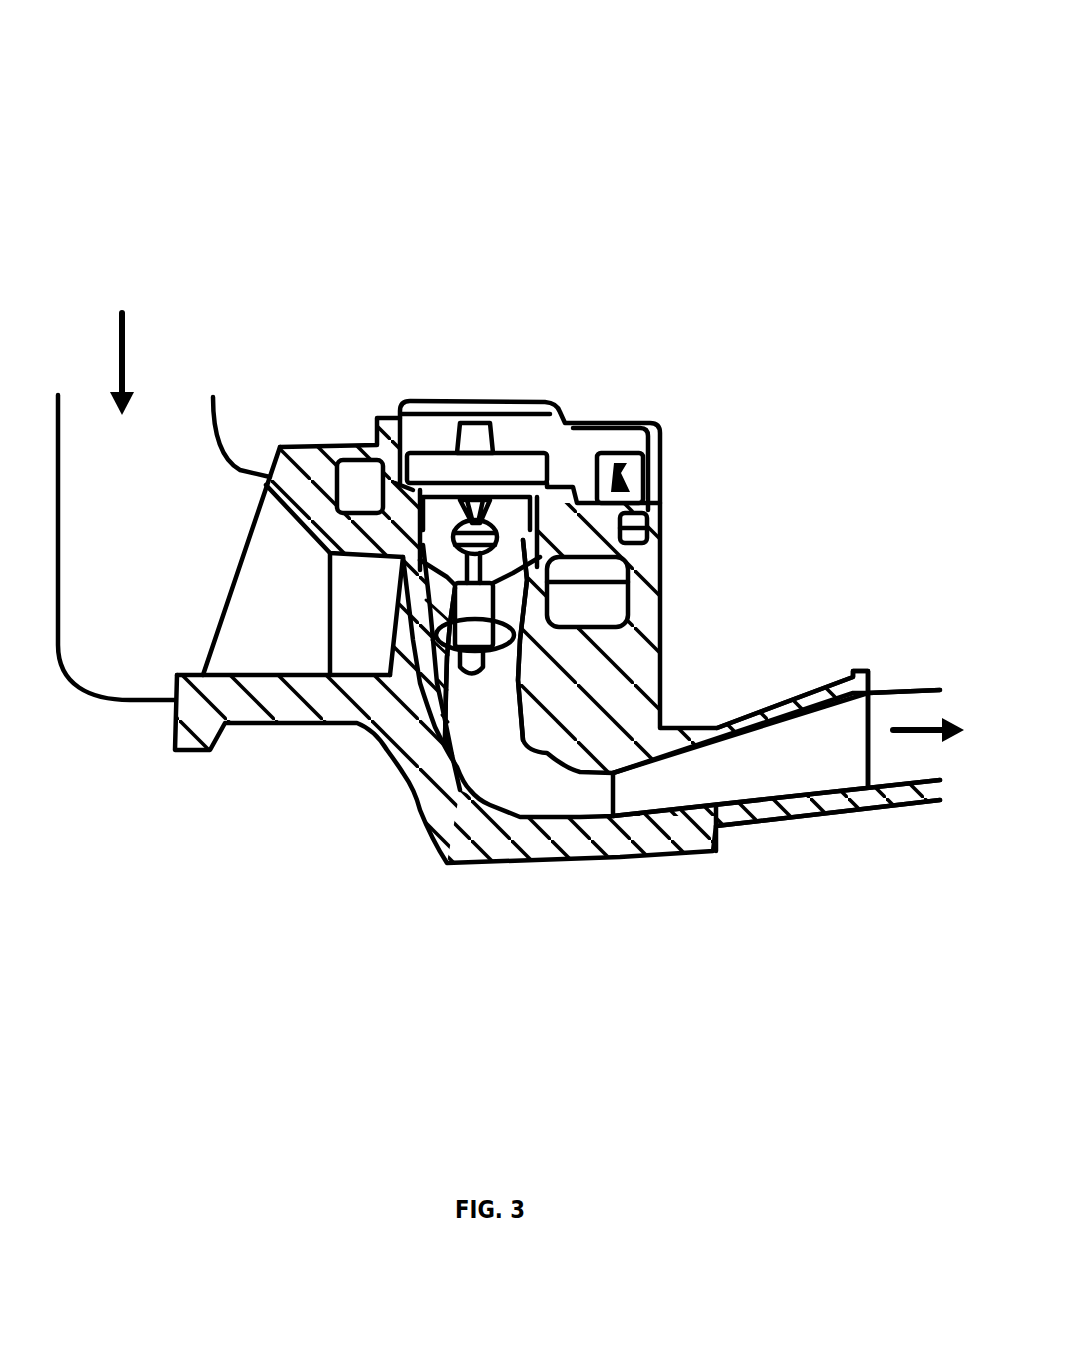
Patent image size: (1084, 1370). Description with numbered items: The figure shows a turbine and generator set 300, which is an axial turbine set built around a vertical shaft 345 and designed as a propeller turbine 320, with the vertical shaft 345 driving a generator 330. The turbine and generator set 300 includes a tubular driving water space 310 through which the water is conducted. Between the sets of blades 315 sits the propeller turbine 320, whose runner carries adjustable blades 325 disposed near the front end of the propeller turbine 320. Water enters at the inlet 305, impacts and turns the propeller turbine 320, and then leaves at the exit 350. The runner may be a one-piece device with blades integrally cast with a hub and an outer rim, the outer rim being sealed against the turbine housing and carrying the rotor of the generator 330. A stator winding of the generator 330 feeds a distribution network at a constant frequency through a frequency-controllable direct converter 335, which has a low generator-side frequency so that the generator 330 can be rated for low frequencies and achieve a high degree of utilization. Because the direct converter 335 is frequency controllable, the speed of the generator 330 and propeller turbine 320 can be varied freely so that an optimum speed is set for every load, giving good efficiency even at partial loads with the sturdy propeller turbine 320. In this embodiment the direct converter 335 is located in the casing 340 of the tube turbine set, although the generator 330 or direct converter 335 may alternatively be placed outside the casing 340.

The turbine and generator set 300 is at (183, 80).
The water entry 305 is at (121, 341).
The tubular driving water space 310 is at (843, 738).
The sets of blades 315 is at (403, 563).
The propeller turbine 320 is at (500, 702).
The adjustable blades 325 is at (440, 592).
The generator 330 is at (437, 470).
The direct converter 335 is at (637, 443).
The casing 340 is at (573, 453).
The vertical shaft 345 is at (545, 545).
The water exit 350 is at (928, 747).